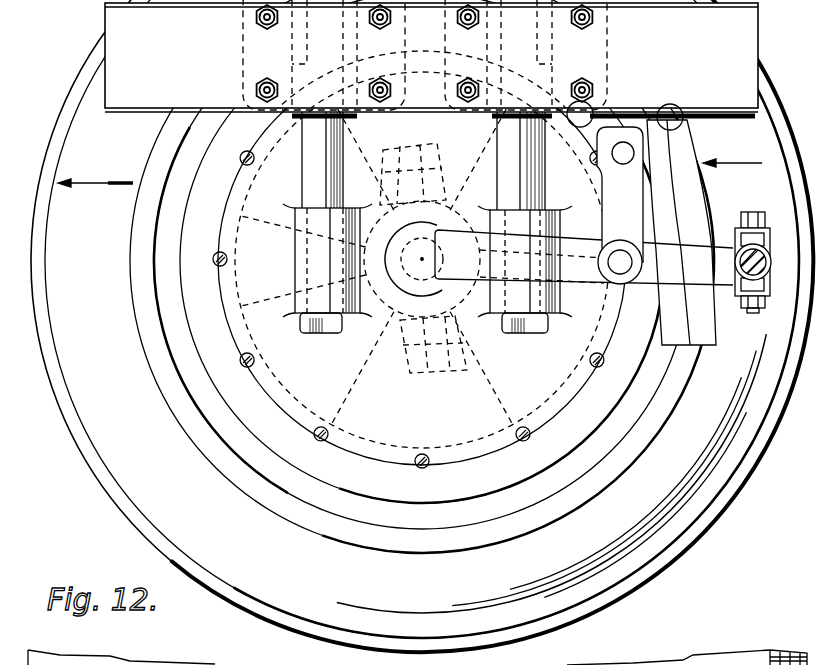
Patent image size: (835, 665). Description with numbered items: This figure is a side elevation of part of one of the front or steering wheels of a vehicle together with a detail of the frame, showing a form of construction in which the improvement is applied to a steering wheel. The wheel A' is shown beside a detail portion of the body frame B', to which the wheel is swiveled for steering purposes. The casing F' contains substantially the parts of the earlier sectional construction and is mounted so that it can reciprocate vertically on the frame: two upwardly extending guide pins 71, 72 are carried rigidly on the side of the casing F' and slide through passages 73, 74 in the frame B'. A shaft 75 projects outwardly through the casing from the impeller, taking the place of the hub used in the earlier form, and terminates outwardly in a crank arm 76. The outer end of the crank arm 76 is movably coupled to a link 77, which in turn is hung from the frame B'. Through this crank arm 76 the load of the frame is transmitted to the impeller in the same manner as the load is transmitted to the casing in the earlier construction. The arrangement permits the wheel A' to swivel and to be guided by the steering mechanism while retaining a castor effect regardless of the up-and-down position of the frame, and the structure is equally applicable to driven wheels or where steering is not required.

The guide pin 71 is at (304, 190).
The guide pin 72 is at (530, 188).
The passage 73 is at (292, 67).
The passage 74 is at (543, 63).
The shaft 75 is at (408, 281).
The crank arm 76 is at (463, 280).
The link 77 is at (640, 208).
The body frame detail portion B' is at (431, 57).
The casing F' is at (422, 276).
The wheel A' is at (422, 326).